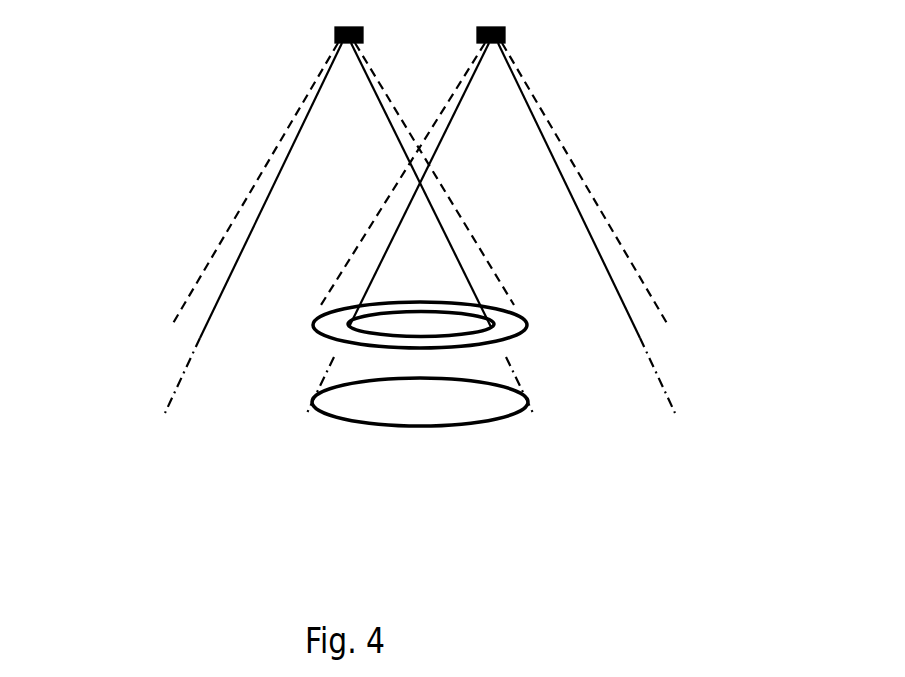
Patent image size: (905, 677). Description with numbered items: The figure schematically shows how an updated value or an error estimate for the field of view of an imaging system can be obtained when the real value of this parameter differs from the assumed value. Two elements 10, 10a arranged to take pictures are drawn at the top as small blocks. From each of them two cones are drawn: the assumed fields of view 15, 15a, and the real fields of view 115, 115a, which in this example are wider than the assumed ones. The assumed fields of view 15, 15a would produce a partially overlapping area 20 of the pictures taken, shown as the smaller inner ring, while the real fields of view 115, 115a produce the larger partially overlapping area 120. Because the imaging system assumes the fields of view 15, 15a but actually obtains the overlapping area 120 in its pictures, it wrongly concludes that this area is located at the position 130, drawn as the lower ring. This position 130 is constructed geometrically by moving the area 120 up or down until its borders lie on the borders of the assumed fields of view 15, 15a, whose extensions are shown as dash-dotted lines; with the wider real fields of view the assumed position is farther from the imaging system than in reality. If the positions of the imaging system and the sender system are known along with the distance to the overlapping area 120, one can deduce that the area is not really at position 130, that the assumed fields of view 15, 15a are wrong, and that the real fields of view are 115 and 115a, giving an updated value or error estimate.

The element arranged to take pictures 10 is at (343, 45).
The element arranged to take pictures 10a is at (500, 45).
The assumed field of view 15 is at (260, 212).
The real field of view 115 is at (207, 270).
The assumed field of view 15a is at (598, 257).
The real field of view 115a is at (575, 172).
The partially overlapping area 120 is at (333, 325).
The partially overlapping area 20 is at (504, 321).
The position 130 is at (420, 408).